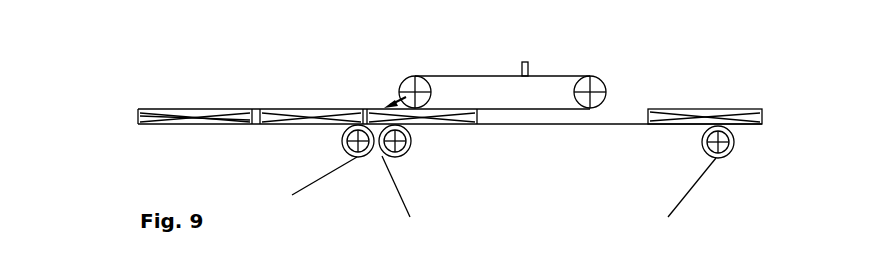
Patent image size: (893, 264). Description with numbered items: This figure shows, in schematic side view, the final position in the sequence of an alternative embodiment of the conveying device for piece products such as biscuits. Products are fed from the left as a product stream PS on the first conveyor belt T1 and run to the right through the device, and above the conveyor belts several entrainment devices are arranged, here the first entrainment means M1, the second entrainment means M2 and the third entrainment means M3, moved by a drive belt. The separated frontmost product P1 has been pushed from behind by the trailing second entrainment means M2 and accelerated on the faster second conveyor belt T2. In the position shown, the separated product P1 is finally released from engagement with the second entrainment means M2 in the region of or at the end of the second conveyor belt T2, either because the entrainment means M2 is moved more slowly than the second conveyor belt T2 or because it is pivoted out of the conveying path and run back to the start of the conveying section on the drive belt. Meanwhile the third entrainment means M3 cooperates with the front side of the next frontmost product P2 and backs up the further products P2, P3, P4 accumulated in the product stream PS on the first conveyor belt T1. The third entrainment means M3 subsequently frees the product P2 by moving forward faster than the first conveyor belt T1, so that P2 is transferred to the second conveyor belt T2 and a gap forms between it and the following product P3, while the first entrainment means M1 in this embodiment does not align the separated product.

The frontmost product P1 is at (708, 110).
The next frontmost product P2 is at (376, 109).
The product following P2 P3 is at (305, 110).
The further product in the product accumulation P4 is at (201, 115).
The product stream PS is at (132, 118).
The first conveyor belt T1 is at (288, 125).
The second conveyor belt T2 is at (608, 126).
The first entrainment means M1 is at (528, 63).
The second entrainment means M2 is at (612, 82).
The third entrainment means M3 is at (477, 124).